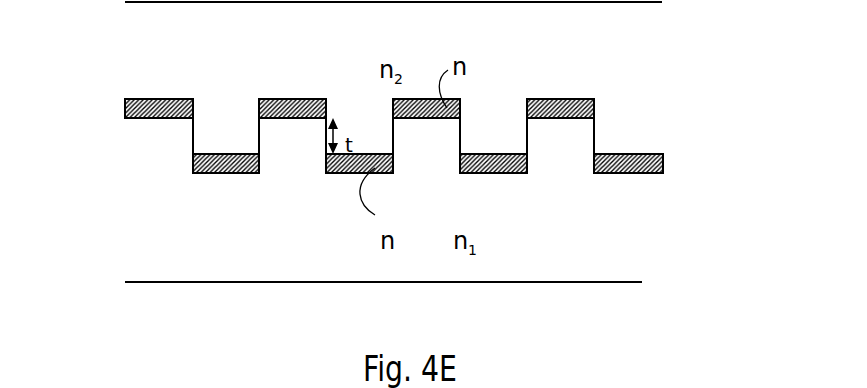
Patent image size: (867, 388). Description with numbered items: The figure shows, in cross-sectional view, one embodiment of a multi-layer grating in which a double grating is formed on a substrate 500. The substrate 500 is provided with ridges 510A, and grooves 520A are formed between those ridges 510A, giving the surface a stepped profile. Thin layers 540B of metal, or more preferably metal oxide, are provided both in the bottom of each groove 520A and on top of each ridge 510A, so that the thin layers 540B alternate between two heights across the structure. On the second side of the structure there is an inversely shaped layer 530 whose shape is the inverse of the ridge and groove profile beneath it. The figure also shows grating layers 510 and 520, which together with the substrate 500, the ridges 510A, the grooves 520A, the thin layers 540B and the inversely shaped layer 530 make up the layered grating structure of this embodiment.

The inversely shaped layer 530 is at (103, 1).
The grating layer 520 is at (103, 100).
The grating layer 510 is at (103, 154).
The substrate 500 is at (103, 176).
The thin layer 540B is at (572, 99).
The groove 520A is at (635, 123).
The ridge 510A is at (563, 177).